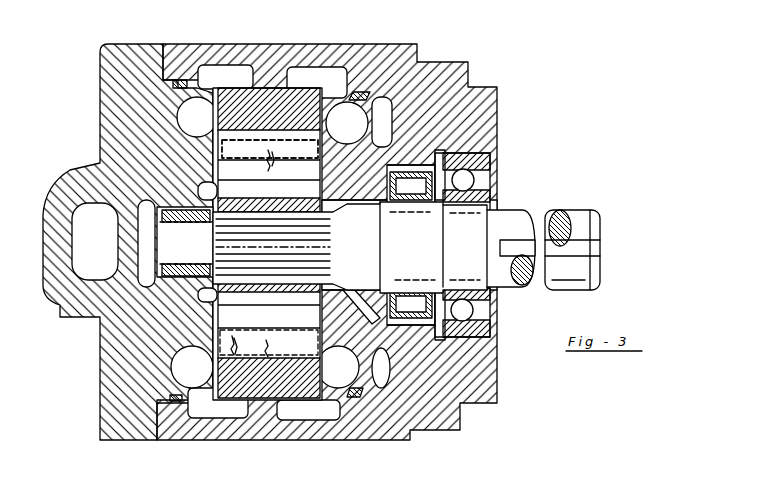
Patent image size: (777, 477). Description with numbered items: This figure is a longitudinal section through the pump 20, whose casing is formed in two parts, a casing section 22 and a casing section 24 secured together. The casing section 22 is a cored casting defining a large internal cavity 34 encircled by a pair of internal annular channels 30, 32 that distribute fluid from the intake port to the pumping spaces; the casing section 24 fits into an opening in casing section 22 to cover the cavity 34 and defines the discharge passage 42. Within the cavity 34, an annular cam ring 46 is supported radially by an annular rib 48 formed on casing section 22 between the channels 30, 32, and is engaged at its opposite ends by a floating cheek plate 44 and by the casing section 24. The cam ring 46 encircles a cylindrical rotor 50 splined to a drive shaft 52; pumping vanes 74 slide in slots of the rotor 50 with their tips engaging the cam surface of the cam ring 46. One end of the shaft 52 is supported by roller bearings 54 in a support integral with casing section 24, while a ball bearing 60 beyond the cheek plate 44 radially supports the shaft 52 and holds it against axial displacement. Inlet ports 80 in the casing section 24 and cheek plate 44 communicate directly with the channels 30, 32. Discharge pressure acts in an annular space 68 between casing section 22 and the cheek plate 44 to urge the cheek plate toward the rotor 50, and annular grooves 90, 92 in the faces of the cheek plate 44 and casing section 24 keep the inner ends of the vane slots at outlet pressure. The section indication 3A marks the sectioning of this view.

The pump 20 is at (513, 135).
The casing section 22 is at (480, 378).
The casing section 24 is at (110, 372).
The annular channel 30 is at (222, 76).
The annular channel 32 is at (323, 76).
The internal cavity 34 is at (241, 400).
The internal passage 42 is at (82, 244).
The cheek plate 44 is at (372, 150).
The cam ring 46 is at (290, 105).
The annular rib 48 is at (272, 92).
The rotor 50 is at (288, 288).
The drive shaft 52 is at (510, 222).
The roller bearings 54 is at (183, 214).
The ball bearing 60 is at (482, 245).
The annular space 68 is at (385, 383).
The pumping vanes 74 is at (245, 169).
The inlet ports 80 is at (185, 130).
The annular groove 90 is at (333, 294).
The annular groove 92 is at (210, 280).
The section line 3A is at (248, 116).